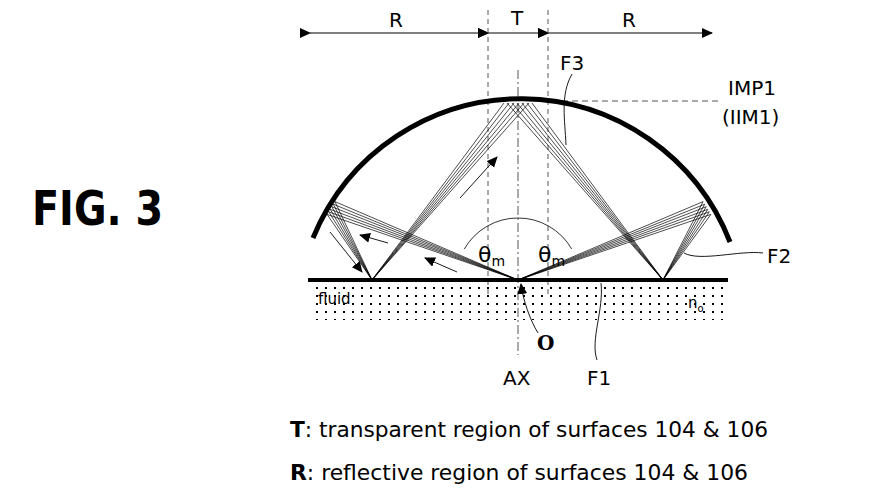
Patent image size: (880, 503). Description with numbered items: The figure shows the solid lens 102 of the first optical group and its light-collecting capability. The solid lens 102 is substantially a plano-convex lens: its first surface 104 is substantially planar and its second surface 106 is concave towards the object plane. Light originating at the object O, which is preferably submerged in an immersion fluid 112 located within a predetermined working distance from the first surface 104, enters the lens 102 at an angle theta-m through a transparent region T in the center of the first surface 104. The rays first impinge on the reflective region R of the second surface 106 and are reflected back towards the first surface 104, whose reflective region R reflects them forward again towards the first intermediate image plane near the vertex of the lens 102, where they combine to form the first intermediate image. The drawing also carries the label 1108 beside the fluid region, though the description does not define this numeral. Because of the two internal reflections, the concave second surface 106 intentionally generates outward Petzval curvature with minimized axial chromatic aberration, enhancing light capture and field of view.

The solid lens 102 is at (444, 130).
The first surface 104 is at (343, 276).
The second surface 106 is at (347, 201).
The immersion fluid 112 is at (726, 305).
The fluid medium / substrate 1108 is at (557, 336).